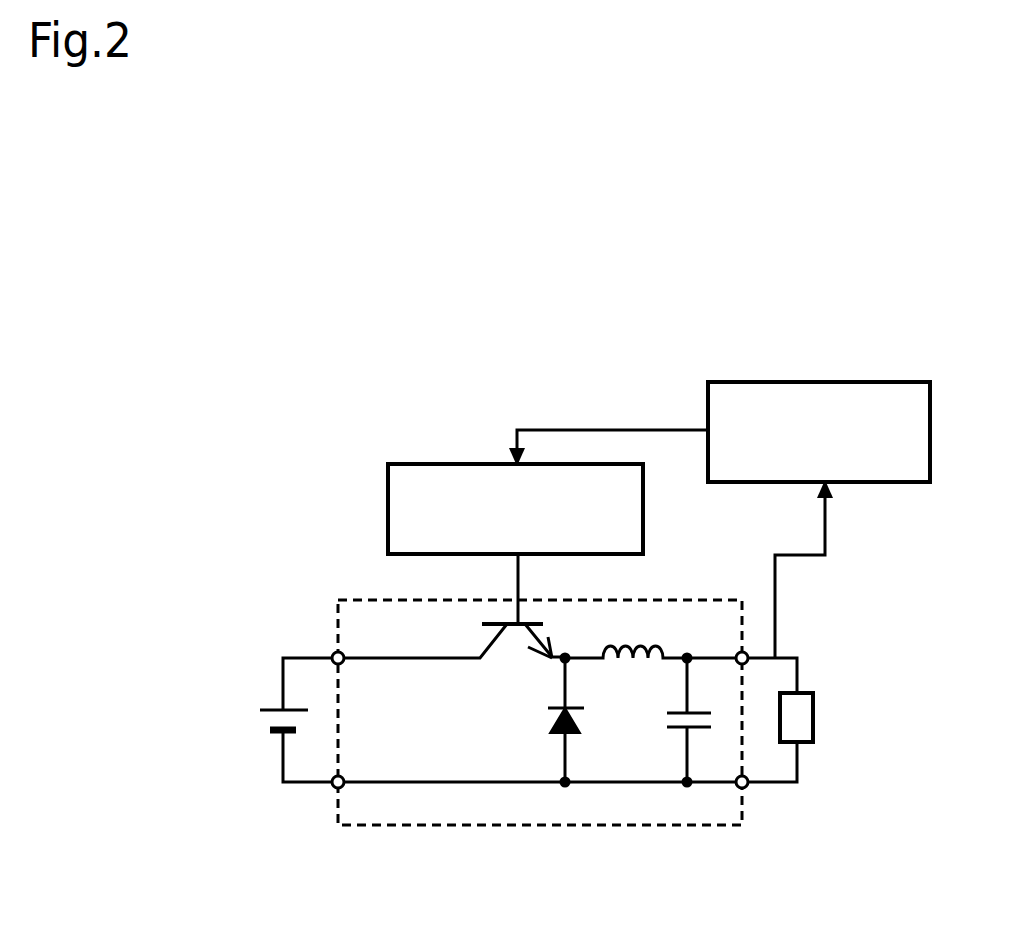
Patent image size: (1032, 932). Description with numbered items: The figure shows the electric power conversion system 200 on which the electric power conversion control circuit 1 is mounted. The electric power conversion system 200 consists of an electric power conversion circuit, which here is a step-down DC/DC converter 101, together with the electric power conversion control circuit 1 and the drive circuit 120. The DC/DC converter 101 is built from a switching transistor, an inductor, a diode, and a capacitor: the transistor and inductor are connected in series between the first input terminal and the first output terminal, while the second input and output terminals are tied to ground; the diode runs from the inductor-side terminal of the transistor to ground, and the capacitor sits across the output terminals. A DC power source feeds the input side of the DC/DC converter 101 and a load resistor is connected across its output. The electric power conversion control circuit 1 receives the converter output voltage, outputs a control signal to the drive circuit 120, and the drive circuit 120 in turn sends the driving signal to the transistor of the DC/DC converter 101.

The electric power conversion system 200 is at (401, 390).
The electric power conversion control circuit 1 is at (810, 382).
The drive circuit 120 is at (448, 462).
The DC/DC converter 101 is at (366, 597).